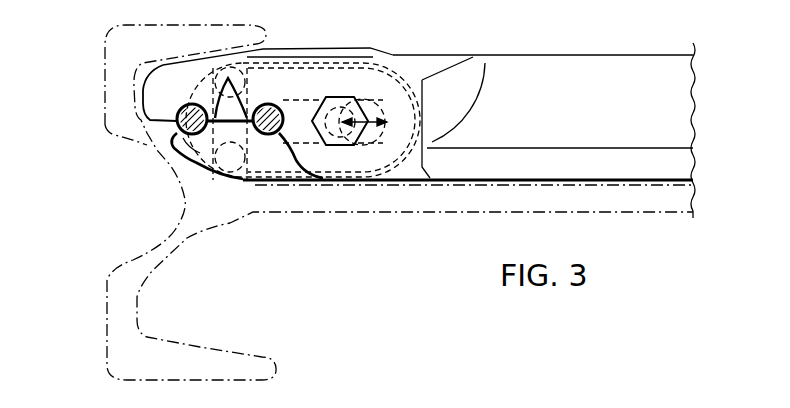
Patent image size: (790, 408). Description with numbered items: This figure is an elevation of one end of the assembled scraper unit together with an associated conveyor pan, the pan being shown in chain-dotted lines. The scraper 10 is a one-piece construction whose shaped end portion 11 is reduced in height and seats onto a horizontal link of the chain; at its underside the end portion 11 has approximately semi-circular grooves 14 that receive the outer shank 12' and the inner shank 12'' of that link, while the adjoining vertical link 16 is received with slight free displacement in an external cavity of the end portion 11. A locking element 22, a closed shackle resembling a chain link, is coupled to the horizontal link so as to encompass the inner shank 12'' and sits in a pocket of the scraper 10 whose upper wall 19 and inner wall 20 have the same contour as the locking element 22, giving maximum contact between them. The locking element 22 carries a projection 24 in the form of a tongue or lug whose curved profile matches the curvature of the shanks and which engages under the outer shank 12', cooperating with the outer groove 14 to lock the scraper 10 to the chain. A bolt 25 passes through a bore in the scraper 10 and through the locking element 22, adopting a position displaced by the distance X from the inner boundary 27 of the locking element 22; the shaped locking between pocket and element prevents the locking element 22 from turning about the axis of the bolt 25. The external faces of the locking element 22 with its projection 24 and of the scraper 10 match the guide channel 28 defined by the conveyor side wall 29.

The scraper 10 is at (617, 43).
The end portion 11 is at (173, 77).
The outer shank 12' is at (176, 155).
The inner shank 12'' is at (311, 188).
The grooves 14 is at (147, 115).
The vertical link 16 is at (236, 172).
The upper wall 19 is at (318, 63).
The inner wall 20 is at (423, 118).
The locking element 22 is at (279, 152).
The projection 24 is at (176, 148).
The bolt 25 is at (346, 147).
The inner boundary 27 is at (388, 113).
The guide channel 28 is at (134, 80).
The conveyor side wall 29 is at (105, 45).
The distance x X is at (380, 121).